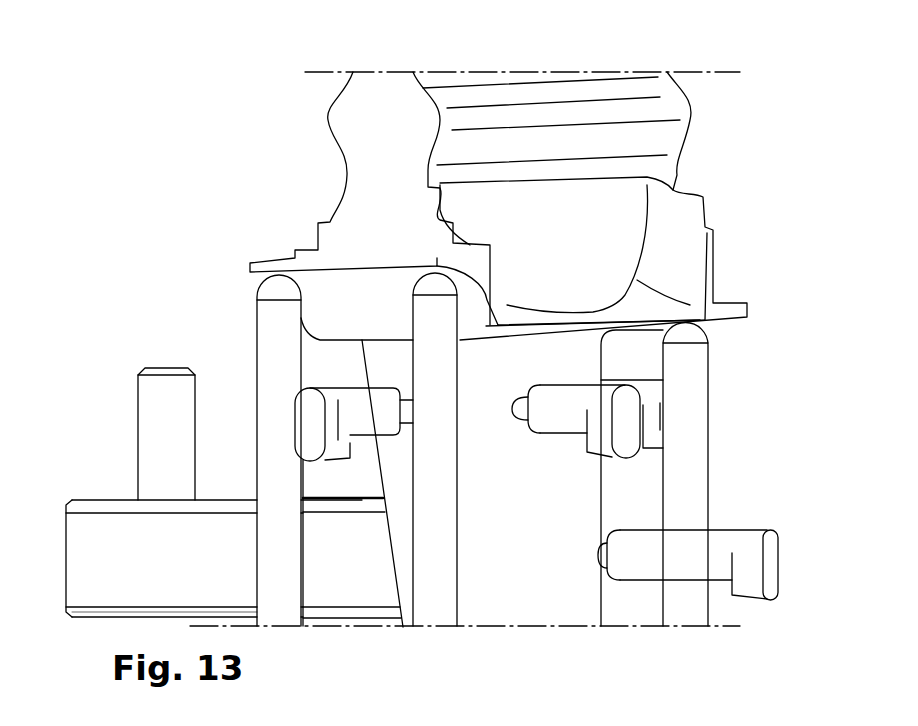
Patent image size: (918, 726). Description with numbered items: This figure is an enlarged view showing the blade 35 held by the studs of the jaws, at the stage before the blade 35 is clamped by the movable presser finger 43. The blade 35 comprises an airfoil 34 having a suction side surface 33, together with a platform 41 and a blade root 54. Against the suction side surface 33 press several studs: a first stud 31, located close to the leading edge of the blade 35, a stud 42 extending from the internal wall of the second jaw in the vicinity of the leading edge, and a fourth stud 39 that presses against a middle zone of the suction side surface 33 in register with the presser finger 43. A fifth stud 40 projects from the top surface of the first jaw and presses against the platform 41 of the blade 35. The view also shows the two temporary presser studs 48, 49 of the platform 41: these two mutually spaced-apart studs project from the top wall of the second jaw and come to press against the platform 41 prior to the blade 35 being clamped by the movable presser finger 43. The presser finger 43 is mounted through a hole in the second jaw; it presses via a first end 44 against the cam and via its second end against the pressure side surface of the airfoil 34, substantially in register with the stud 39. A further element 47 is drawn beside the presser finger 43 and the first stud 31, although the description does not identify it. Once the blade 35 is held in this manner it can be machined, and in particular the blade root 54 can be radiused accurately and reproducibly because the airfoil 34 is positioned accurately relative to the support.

The first stud 31 is at (558, 415).
The suction side surface 33 is at (553, 555).
The airfoil 34 is at (522, 628).
The blade 35 is at (696, 78).
The fourth stud 39 is at (638, 558).
The fifth stud 40 is at (682, 335).
The platform 41 is at (735, 312).
The stud 42 is at (308, 430).
The presser finger 43 is at (132, 585).
The first end 44 is at (64, 579).
The small post 47 is at (162, 440).
The stud 48 is at (278, 320).
The stud 49 is at (433, 322).
The blade root 54 is at (383, 128).